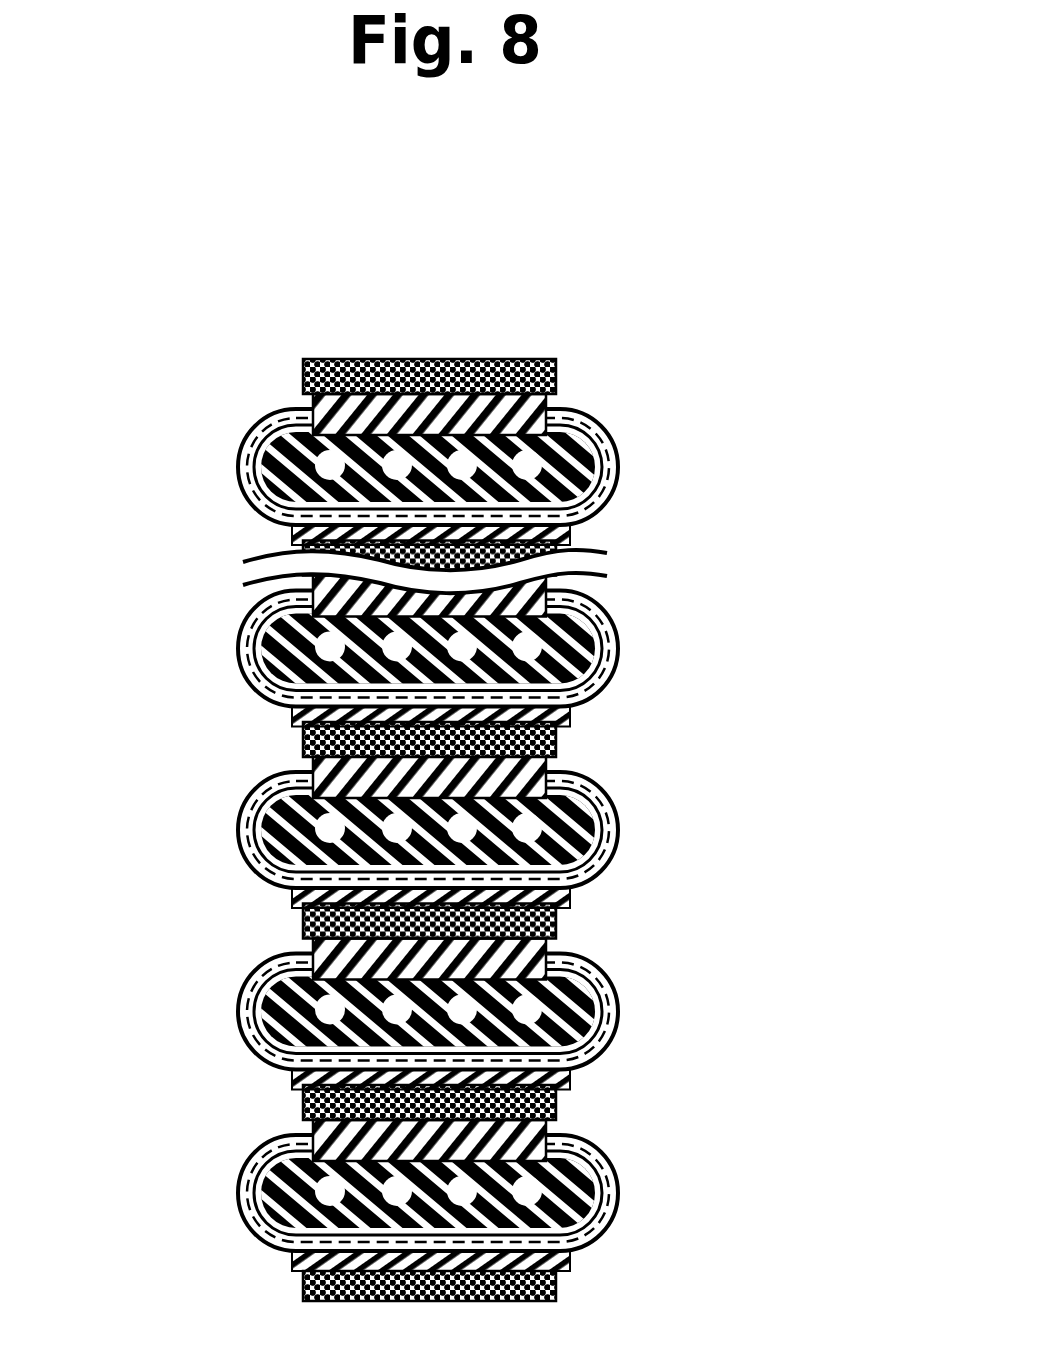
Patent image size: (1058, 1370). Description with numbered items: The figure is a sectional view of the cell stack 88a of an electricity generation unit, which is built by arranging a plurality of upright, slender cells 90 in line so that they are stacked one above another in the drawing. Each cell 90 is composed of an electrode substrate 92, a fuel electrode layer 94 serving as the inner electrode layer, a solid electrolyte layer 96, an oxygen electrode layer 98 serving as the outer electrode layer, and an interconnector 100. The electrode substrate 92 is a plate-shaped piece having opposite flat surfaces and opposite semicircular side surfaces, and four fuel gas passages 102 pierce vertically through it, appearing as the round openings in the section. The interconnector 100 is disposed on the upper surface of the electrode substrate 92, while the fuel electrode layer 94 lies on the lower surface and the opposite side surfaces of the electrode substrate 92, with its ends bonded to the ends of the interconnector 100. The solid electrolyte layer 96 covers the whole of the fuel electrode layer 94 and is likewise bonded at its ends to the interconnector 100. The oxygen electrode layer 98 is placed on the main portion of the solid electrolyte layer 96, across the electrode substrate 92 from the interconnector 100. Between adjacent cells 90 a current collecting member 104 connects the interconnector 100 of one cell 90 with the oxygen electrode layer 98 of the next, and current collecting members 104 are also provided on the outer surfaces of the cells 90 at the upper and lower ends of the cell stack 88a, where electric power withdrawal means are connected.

The cell stack 88a is at (477, 830).
The cell 90 is at (412, 873).
The electrode substrate 92 is at (260, 853).
The fuel electrode layer 94 is at (268, 785).
The solid electrolyte layer 96 is at (623, 827).
The oxygen electrode layer 98 is at (567, 893).
The interconnector 100 is at (567, 767).
The fuel gas passages 102 is at (273, 888).
The current collecting member 104 is at (560, 1097).